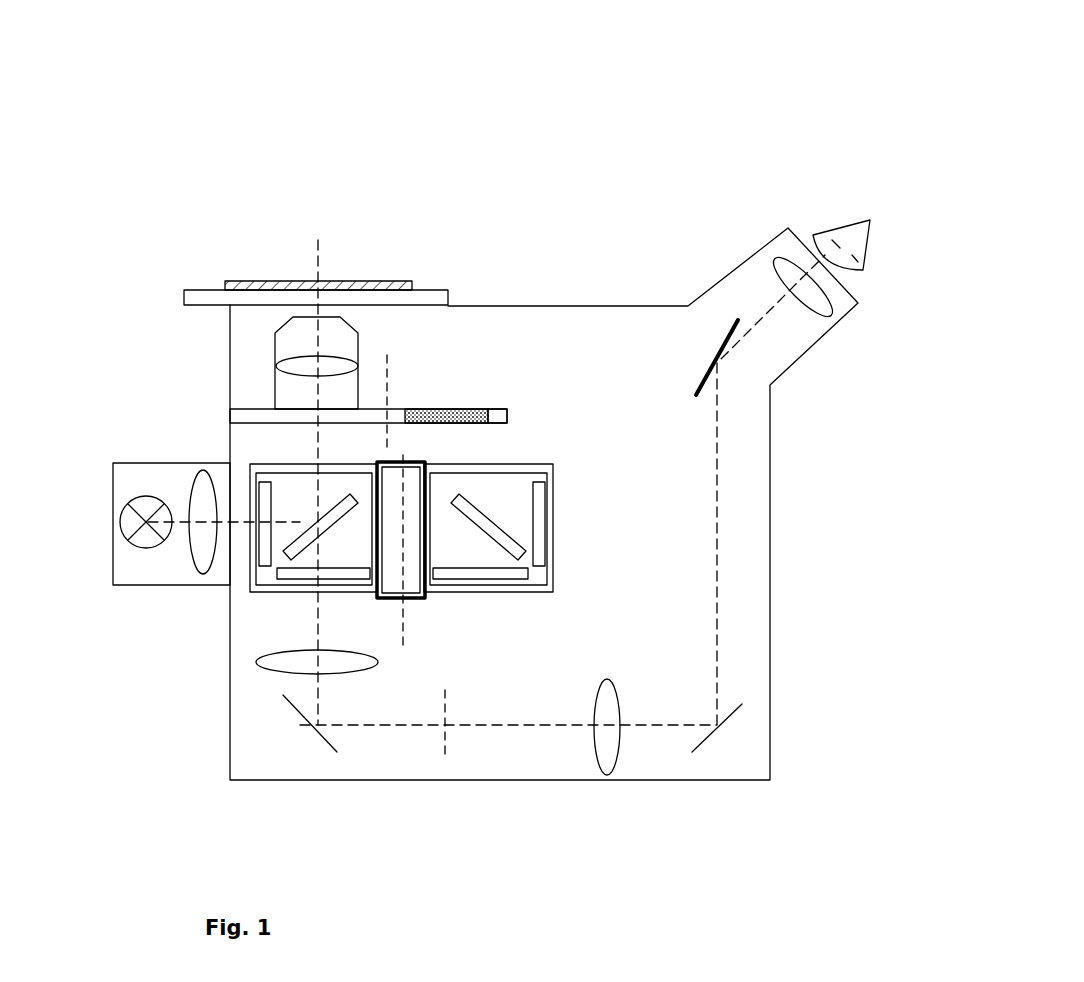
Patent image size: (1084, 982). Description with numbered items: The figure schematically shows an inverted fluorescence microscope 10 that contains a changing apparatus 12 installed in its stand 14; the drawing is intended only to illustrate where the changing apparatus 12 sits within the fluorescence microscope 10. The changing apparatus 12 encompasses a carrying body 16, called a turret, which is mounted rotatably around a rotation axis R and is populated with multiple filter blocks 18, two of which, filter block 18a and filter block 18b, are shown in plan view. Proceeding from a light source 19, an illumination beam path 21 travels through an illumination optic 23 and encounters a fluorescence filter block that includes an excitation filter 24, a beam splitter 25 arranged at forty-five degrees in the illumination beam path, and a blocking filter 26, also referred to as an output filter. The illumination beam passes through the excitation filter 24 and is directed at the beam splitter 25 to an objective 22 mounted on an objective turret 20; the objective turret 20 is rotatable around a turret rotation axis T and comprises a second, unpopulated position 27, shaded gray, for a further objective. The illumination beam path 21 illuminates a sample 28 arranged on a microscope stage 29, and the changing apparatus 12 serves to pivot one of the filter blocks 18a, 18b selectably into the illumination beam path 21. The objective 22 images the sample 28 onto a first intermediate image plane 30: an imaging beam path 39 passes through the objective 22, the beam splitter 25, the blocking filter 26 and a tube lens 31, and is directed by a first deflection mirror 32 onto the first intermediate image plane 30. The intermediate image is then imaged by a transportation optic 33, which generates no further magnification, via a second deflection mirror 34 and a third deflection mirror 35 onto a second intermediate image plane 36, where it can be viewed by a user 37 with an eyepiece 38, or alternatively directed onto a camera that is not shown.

The fluorescence microscope 10 is at (556, 103).
The changing apparatus 12 is at (553, 470).
The stand 14 is at (755, 568).
The carrying body 16 is at (410, 472).
The filter blocks 18 is at (327, 465).
The filter block 18a is at (296, 490).
The filter block 18b is at (486, 487).
The light source 19 is at (146, 500).
The objective turret 20 is at (497, 410).
The illumination beam path 21 is at (178, 528).
The objective 22 is at (286, 338).
The illumination optic 23 is at (203, 490).
The excitation filter 24 is at (265, 560).
The beam splitter 25 is at (305, 552).
The blocking filter 26 is at (333, 573).
The unpopulated position 27 is at (440, 410).
The sample 28 is at (372, 283).
The microscope stage 29 is at (432, 298).
The first intermediate image plane 30 is at (445, 735).
The tube lens 31 is at (343, 663).
The first deflection mirror 32 is at (290, 710).
The transportation optic 33 is at (615, 738).
The second deflection mirror 34 is at (706, 732).
The third deflection mirror 35 is at (700, 378).
The second intermediate image plane 36 is at (757, 275).
The user 37 is at (833, 235).
The eyepiece 38 is at (787, 265).
The imaging beam path 39 is at (318, 622).
The turret rotation axis T is at (388, 378).
The rotation axis R is at (405, 612).